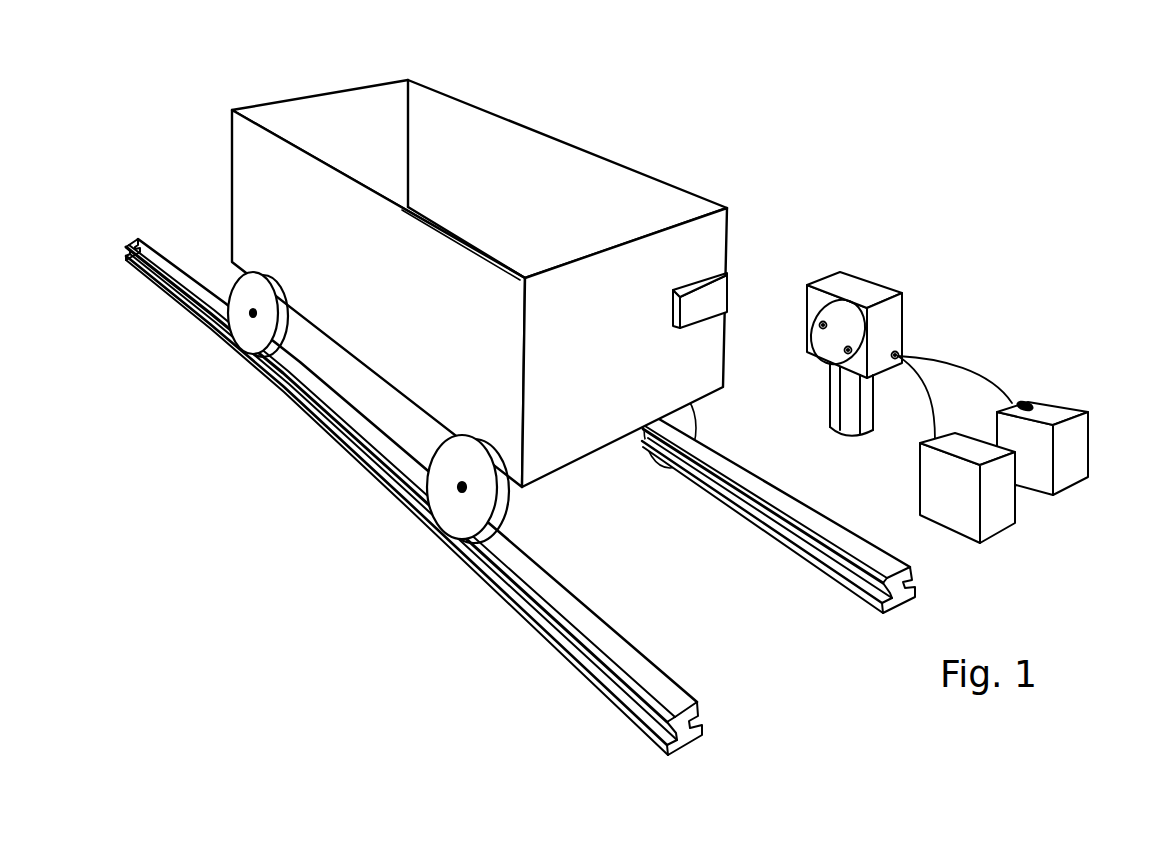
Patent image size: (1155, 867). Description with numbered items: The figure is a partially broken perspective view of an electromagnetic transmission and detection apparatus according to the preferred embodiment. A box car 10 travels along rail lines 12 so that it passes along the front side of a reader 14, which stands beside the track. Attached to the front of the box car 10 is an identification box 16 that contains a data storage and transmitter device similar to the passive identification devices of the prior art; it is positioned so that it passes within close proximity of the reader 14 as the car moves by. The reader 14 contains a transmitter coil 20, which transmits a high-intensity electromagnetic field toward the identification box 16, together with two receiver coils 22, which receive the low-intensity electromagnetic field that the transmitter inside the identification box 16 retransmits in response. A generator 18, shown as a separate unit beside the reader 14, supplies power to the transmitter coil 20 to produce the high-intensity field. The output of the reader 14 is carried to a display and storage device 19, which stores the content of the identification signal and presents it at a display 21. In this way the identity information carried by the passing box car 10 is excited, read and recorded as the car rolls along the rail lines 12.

The box car 10 is at (443, 142).
The rail lines 12 is at (728, 490).
The reader 14 is at (850, 291).
The identification box 16 is at (715, 300).
The generator 18 is at (1000, 500).
The display and storage device 19 is at (1082, 440).
The transmitter coil 20 is at (833, 340).
The display 21 is at (1033, 403).
The receiver coils 22 is at (823, 325).